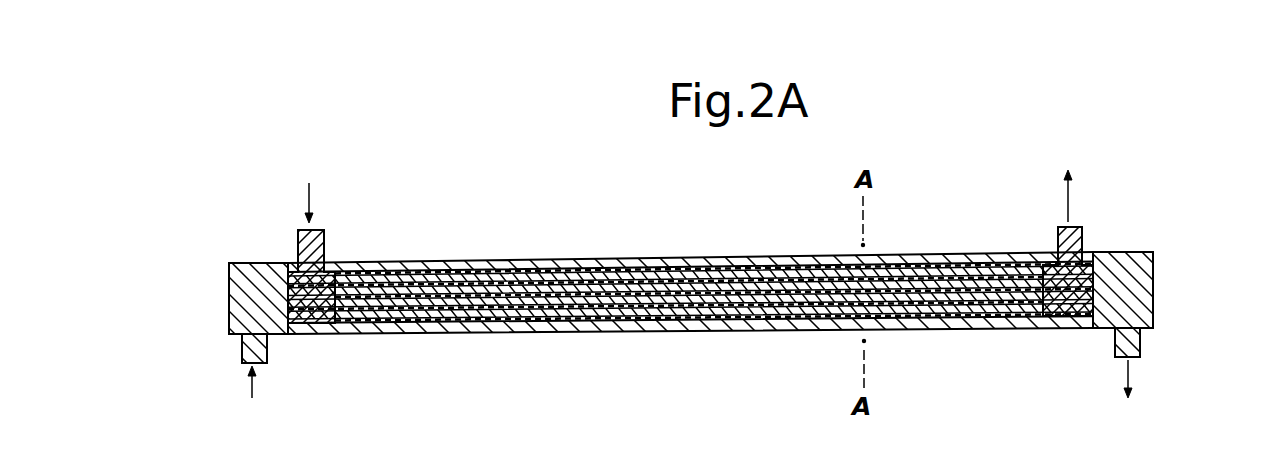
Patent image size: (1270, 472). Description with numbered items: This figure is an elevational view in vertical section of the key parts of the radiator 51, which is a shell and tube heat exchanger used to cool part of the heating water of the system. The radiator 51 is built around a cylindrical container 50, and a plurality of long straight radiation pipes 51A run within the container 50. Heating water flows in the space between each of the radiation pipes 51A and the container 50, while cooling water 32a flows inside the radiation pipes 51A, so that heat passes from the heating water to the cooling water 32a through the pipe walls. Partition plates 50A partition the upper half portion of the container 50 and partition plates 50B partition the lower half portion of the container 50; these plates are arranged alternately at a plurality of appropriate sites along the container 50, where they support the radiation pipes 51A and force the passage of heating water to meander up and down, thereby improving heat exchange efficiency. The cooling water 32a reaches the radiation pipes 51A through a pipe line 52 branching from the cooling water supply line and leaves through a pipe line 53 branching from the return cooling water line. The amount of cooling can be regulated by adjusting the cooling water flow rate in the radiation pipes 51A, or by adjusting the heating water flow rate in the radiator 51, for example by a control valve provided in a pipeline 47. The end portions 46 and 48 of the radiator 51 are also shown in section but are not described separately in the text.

The cooling water 32a is at (315, 307).
The first end block 46 is at (243, 274).
The pipeline 47 is at (240, 348).
The projection of second end block 48 is at (1142, 340).
The cylindrical container 50 is at (453, 335).
The partition plates 50A is at (463, 258).
The partition plates 50B is at (577, 333).
The radiator 51 is at (688, 266).
The radiation pipes 51A is at (558, 296).
The pipe line 52 is at (325, 247).
The pipe line 53 is at (1085, 232).